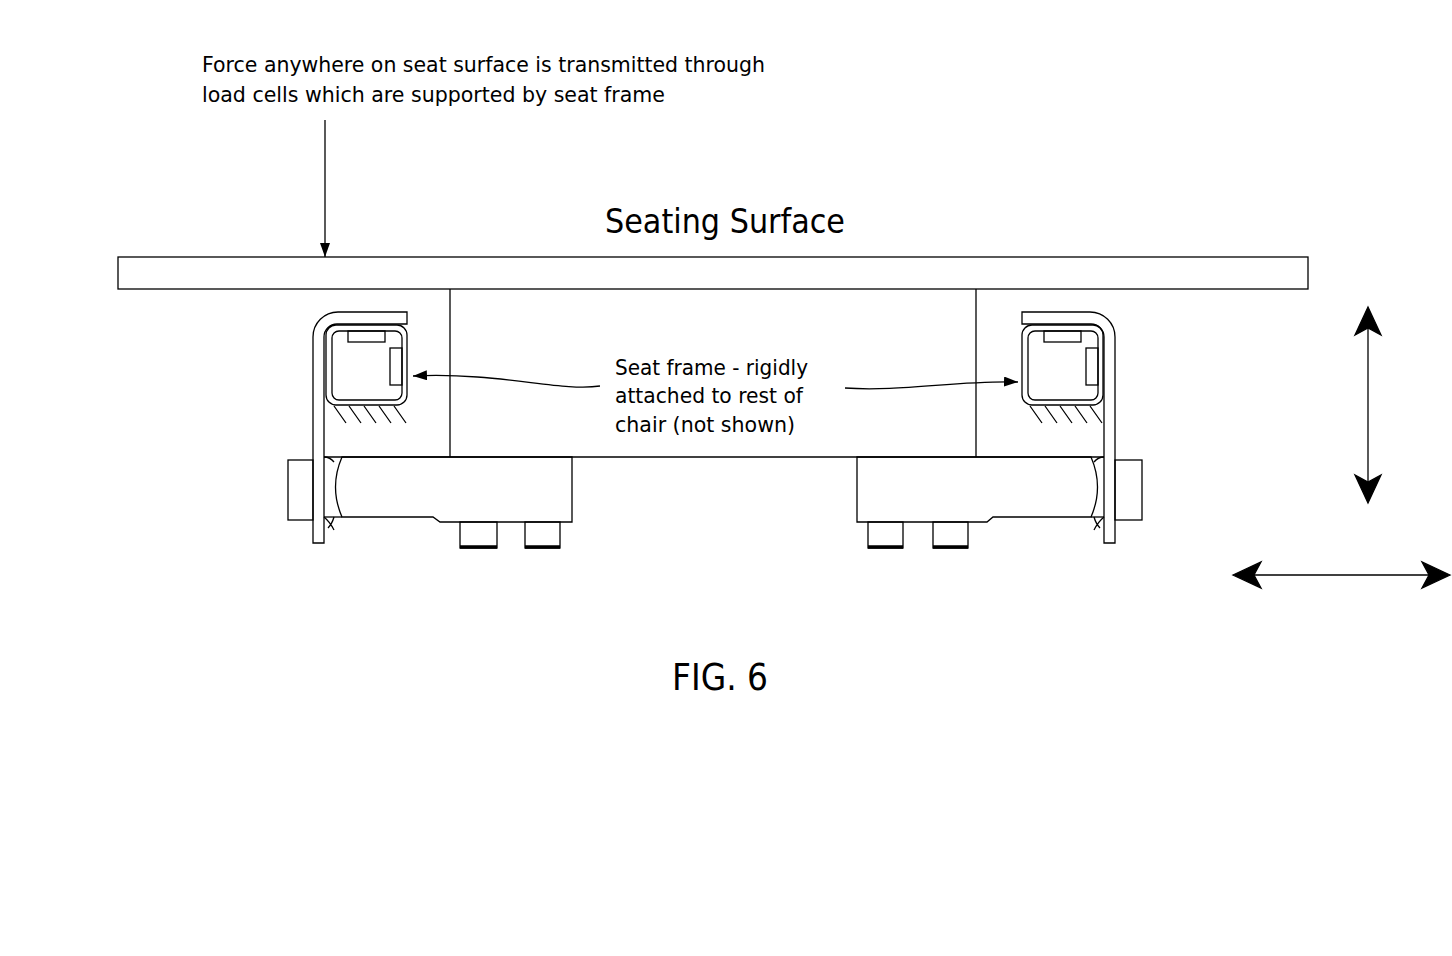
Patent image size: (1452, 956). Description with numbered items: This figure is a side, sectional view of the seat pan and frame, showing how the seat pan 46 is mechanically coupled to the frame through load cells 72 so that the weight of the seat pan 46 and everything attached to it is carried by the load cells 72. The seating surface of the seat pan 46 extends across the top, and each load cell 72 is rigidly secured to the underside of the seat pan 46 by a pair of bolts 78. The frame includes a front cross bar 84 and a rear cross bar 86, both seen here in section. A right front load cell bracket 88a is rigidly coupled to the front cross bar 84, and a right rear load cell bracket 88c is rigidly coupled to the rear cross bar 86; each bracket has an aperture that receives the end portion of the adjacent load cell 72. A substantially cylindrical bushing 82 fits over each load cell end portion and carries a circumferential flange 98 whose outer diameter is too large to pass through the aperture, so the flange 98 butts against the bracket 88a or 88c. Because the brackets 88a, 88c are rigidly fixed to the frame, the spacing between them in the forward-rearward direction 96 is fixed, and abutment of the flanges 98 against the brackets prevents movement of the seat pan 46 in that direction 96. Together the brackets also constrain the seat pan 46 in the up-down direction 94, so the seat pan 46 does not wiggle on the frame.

The seat pan 46 is at (993, 253).
The load cell 72 is at (401, 496).
The bolts 78 is at (550, 532).
The bushing 82 is at (298, 502).
The front cross bar 84 is at (1020, 356).
The rear cross bar 86 is at (408, 358).
The right front load cell bracket 88a is at (1112, 421).
The right rear load cell bracket 88c is at (317, 423).
The up-down direction 94 is at (1368, 408).
The forward-rearward direction 96 is at (1338, 575).
The circumferential flange 98 is at (329, 524).